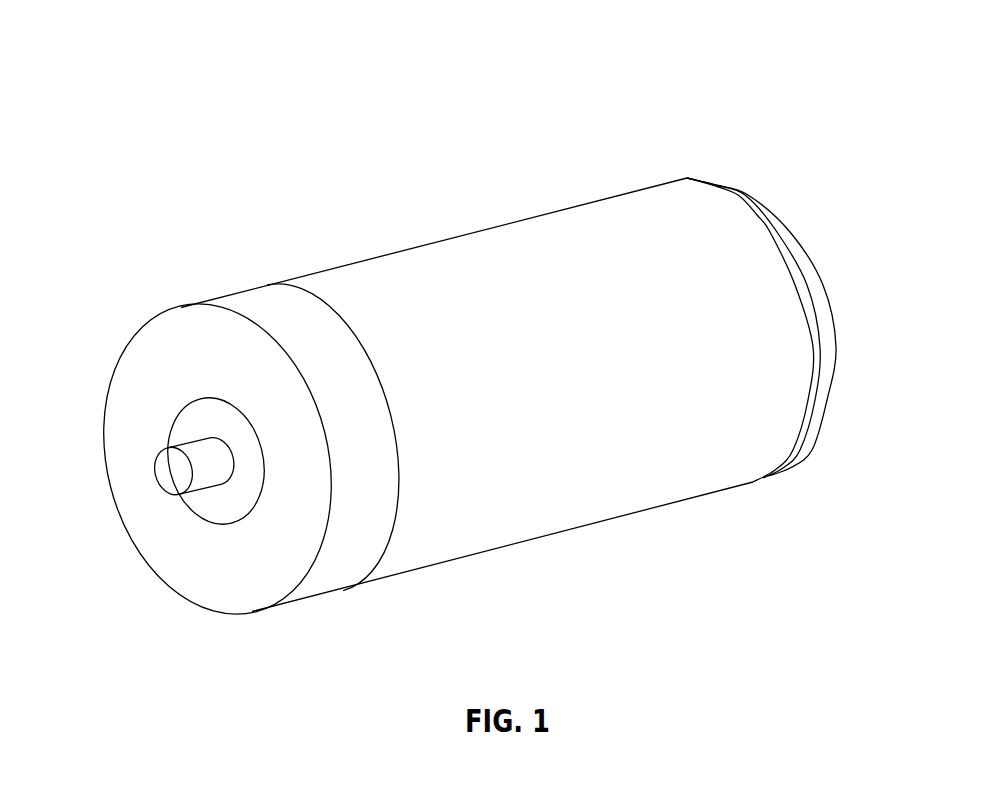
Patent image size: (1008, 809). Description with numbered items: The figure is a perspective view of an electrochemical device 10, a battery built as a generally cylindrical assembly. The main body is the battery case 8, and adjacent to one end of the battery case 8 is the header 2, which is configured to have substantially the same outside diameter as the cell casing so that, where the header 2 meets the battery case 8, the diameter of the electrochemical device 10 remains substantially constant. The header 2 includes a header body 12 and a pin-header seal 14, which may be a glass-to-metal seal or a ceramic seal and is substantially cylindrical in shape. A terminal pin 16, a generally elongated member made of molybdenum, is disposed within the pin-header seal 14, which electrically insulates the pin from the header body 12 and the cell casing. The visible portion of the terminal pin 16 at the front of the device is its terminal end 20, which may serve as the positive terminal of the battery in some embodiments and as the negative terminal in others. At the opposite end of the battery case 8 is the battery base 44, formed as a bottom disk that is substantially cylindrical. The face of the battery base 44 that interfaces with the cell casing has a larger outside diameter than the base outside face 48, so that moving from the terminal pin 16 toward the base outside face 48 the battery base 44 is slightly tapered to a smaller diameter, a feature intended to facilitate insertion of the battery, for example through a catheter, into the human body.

The electrochemical device 10 is at (176, 64).
The header 2 is at (123, 238).
The battery case 8 is at (505, 203).
The header body 12 is at (316, 613).
The pin-header seal 14 is at (190, 410).
The terminal pin 16 is at (201, 494).
The terminal end 20 is at (166, 494).
The battery base 44 is at (798, 114).
The base outside face 48 is at (849, 354).